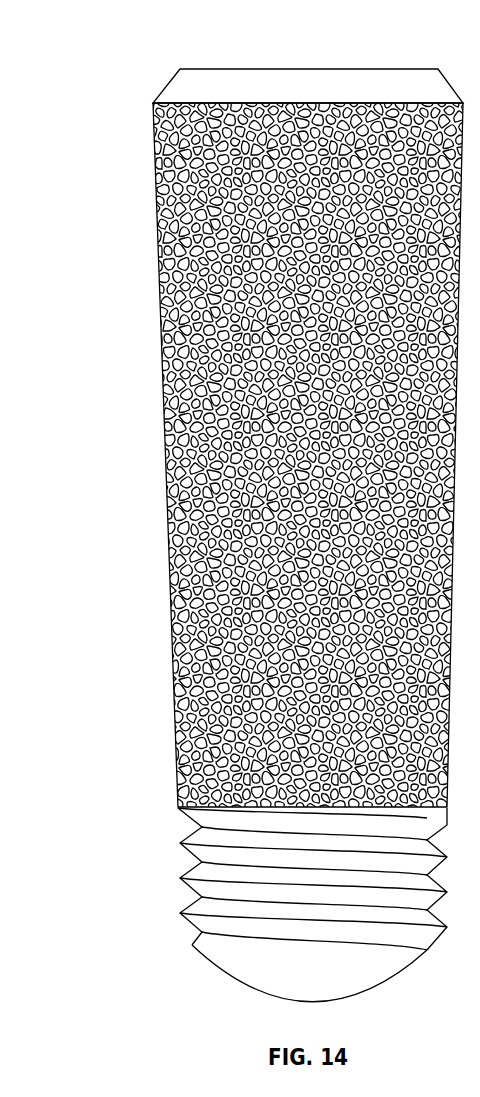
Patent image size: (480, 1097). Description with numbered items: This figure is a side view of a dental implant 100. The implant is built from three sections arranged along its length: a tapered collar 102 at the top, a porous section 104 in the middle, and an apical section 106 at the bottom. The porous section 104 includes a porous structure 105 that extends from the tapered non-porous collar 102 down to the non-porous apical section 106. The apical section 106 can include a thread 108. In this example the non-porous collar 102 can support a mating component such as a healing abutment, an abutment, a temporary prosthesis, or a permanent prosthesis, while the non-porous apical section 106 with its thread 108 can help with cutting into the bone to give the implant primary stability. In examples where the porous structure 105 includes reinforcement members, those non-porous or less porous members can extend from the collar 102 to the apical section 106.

The dental implant 100 is at (100, 48).
The tapered collar 102 is at (178, 82).
The porous section 104 is at (98, 437).
The porous structure 105 is at (190, 532).
The apical section 106 is at (128, 900).
The thread 108 is at (188, 913).